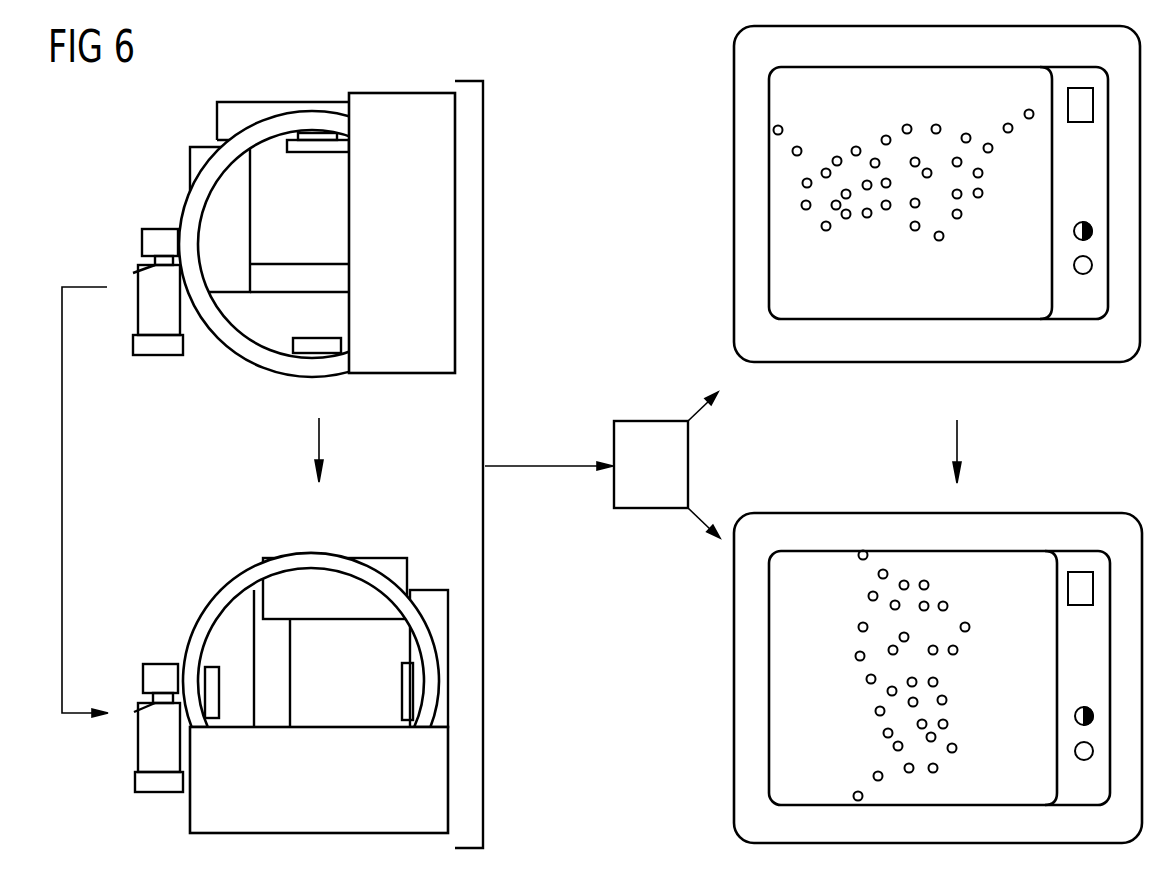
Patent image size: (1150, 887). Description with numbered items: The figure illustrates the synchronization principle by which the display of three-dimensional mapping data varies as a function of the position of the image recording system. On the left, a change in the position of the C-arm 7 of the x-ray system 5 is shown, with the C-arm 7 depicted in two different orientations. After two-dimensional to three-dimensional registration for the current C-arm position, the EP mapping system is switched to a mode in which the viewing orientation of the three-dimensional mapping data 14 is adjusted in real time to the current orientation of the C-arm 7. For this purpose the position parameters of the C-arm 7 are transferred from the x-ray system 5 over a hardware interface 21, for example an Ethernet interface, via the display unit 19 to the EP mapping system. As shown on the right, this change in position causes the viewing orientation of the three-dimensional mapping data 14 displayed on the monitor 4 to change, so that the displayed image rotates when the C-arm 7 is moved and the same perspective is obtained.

The monitor 4 is at (830, 345).
The x-ray system 5 is at (315, 834).
The C-arm 7 is at (243, 343).
The 3D mapping data 14 is at (793, 151).
The display unit 19 is at (653, 421).
The hardware interface 21 is at (487, 467).